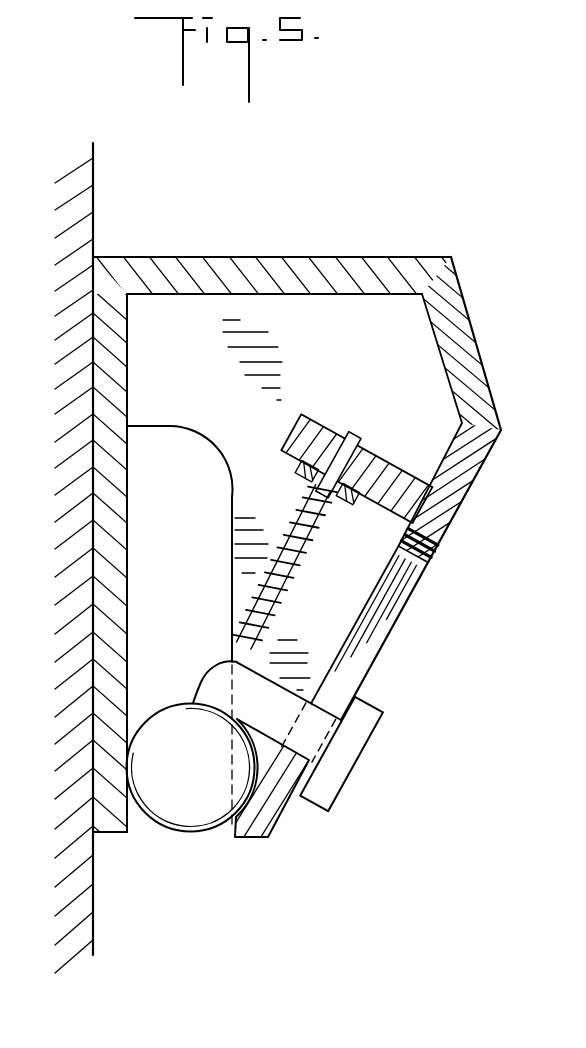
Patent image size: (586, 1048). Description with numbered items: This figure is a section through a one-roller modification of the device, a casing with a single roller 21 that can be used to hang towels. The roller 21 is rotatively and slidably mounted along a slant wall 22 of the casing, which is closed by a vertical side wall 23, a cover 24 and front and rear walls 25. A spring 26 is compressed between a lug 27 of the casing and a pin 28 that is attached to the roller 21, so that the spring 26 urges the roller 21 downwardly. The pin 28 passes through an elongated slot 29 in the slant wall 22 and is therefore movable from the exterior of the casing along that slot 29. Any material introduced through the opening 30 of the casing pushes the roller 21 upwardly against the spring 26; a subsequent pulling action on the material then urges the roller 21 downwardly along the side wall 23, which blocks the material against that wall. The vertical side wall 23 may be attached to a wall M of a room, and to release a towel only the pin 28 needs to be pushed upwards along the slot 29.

The wall of a room M is at (80, 172).
The roller 21 is at (197, 826).
The slant wall 22 is at (453, 495).
The vertical side wall 23 is at (117, 638).
The cover 24 is at (360, 267).
The front and rear walls 25 is at (240, 443).
The spring 26 is at (283, 612).
The lug 27 is at (388, 462).
The pin 28 is at (348, 758).
The elongated slot 29 is at (403, 583).
The opening 30 is at (137, 826).